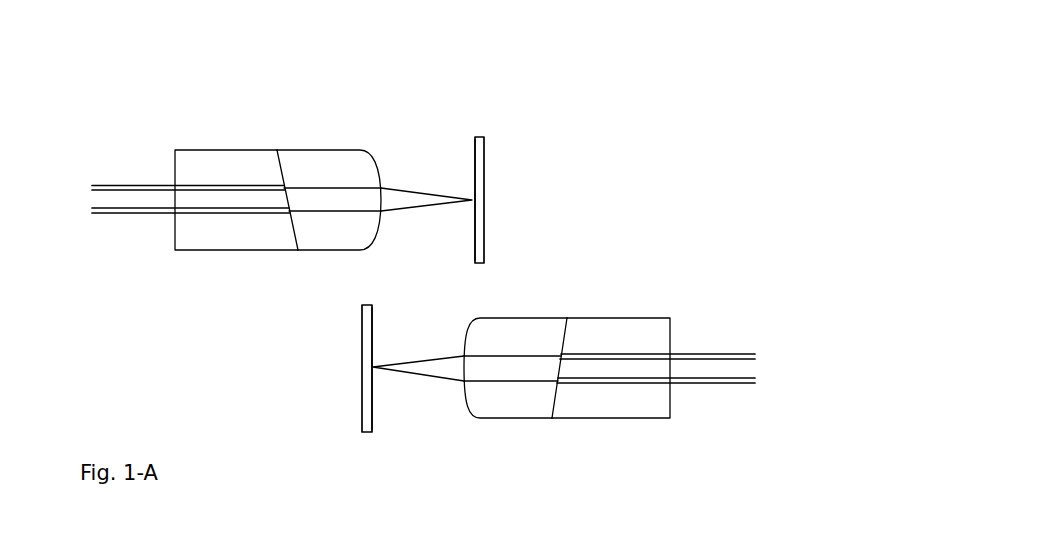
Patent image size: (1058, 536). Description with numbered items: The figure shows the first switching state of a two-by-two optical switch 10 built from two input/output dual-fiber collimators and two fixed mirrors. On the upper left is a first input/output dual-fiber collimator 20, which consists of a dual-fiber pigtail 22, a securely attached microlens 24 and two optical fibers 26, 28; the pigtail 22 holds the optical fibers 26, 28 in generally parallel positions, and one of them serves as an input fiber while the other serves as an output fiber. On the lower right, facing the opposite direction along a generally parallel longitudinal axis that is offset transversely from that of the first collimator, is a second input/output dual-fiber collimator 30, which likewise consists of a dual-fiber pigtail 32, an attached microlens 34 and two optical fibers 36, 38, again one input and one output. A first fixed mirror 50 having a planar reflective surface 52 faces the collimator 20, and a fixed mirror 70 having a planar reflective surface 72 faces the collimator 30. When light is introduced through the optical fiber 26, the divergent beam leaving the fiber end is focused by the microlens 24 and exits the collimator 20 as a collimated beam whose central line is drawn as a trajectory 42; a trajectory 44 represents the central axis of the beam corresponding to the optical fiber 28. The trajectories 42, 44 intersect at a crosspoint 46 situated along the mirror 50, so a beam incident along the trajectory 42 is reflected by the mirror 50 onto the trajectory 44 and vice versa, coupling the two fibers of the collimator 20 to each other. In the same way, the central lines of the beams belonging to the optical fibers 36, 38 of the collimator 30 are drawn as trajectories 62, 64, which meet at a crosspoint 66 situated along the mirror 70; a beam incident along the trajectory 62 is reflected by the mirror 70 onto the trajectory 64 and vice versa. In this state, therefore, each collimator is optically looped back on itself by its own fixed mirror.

The optical switch 10 is at (633, 77).
The first input/output dual-fiber collimator 20 is at (273, 105).
The dual-fiber pigtail 22 is at (220, 150).
The microlens 24 is at (322, 148).
The optical fiber 26 is at (123, 182).
The optical fiber 28 is at (122, 215).
The trajectory 42 is at (358, 183).
The trajectory 44 is at (367, 215).
The crosspoint 46 is at (472, 202).
The first fixed mirror 50 is at (480, 132).
The planar reflective surface 52 is at (472, 172).
The second input/output dual-fiber collimator 30 is at (573, 283).
The dual-fiber pigtail 32 is at (605, 418).
The microlens 34 is at (508, 418).
The optical fiber 36 is at (722, 385).
The optical fiber 38 is at (720, 352).
The trajectory 62 is at (492, 383).
The trajectory 64 is at (508, 352).
The crosspoint 66 is at (375, 363).
The fixed mirror 70 is at (367, 438).
The planar reflective surface 72 is at (376, 401).